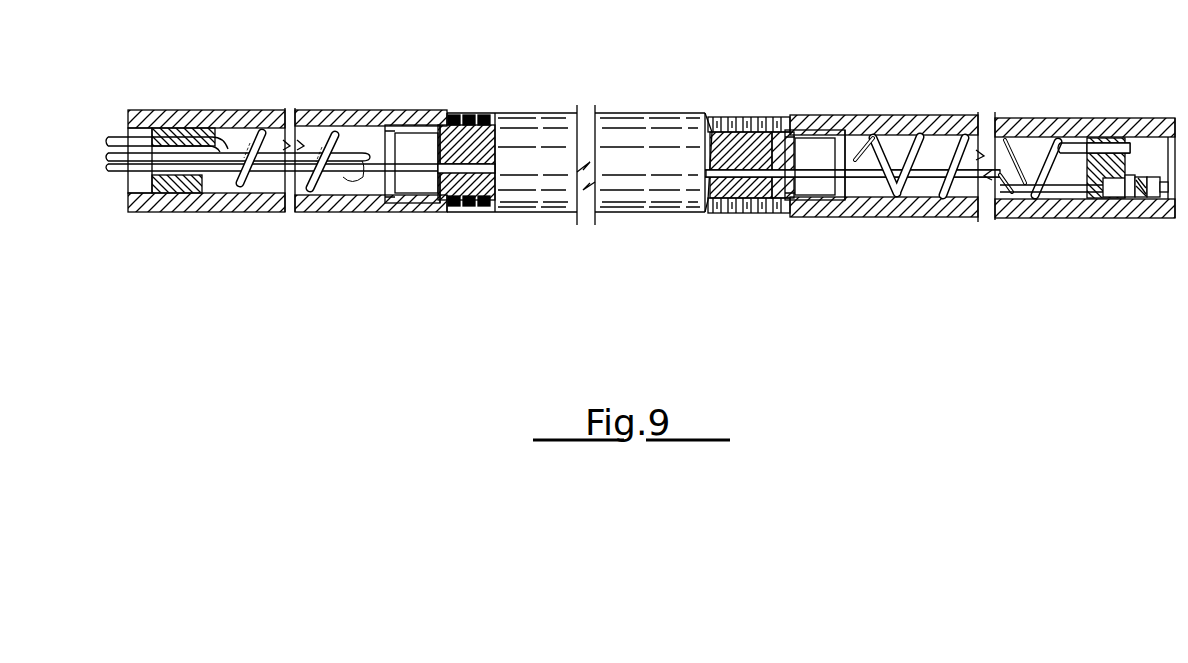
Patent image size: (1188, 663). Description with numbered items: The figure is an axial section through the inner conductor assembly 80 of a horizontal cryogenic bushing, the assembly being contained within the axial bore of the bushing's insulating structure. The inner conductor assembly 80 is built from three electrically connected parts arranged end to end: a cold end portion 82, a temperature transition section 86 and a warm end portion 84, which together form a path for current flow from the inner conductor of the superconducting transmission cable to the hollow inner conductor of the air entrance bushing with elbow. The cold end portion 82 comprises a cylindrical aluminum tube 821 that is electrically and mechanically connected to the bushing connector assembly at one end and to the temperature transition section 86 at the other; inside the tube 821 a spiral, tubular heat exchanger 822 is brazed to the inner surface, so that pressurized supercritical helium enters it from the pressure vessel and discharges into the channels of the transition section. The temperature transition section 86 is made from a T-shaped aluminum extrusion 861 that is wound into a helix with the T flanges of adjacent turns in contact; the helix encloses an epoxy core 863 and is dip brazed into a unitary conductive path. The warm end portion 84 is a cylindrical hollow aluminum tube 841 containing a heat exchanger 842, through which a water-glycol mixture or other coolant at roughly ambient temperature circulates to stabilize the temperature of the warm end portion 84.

The inner conductor assembly 80 is at (611, 140).
The cold end portion 82 is at (1107, 110).
The warm end portion 84 is at (328, 108).
The temperature transition section 86 is at (645, 213).
The cylindrical aluminum tube 821 is at (925, 108).
The spiral tubular heat exchanger 822 is at (1035, 198).
The cylindrical hollow aluminum tube 841 is at (255, 110).
The heat exchanger 842 is at (312, 192).
The T-shaped aluminum extrusion 861 is at (750, 213).
The epoxy core 863 is at (481, 108).